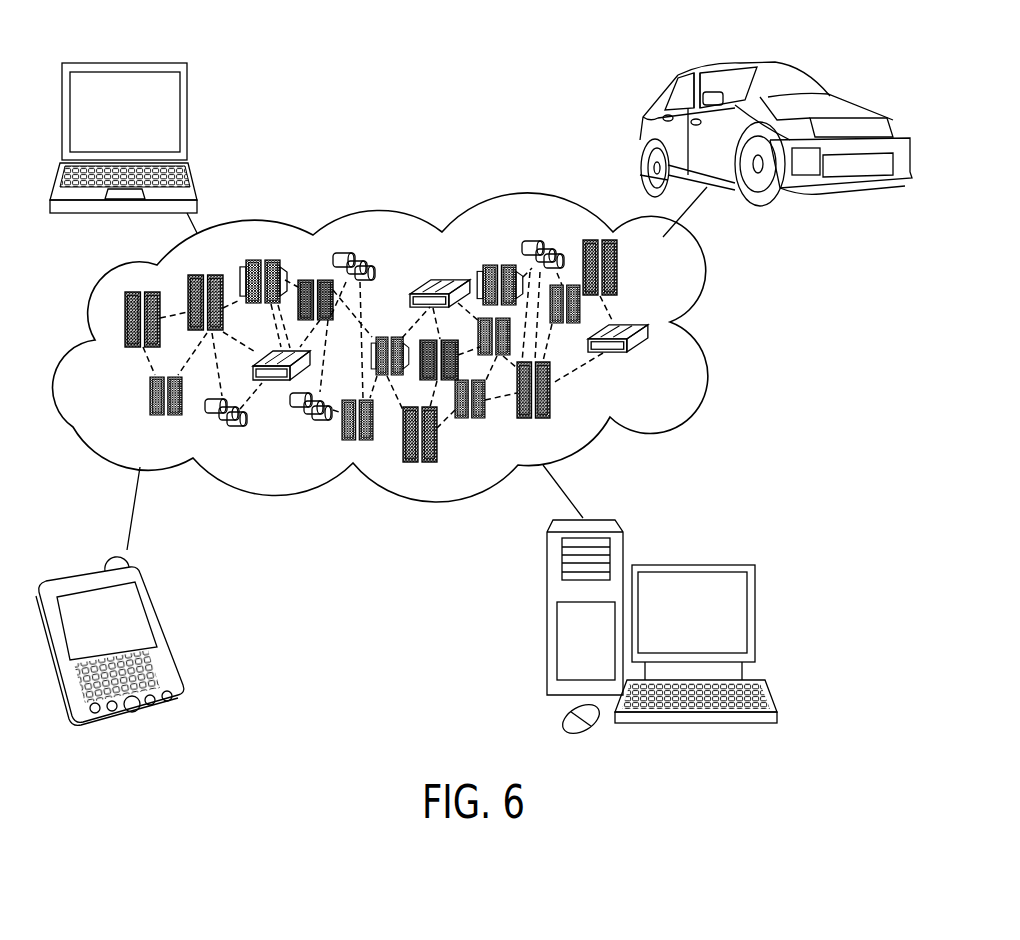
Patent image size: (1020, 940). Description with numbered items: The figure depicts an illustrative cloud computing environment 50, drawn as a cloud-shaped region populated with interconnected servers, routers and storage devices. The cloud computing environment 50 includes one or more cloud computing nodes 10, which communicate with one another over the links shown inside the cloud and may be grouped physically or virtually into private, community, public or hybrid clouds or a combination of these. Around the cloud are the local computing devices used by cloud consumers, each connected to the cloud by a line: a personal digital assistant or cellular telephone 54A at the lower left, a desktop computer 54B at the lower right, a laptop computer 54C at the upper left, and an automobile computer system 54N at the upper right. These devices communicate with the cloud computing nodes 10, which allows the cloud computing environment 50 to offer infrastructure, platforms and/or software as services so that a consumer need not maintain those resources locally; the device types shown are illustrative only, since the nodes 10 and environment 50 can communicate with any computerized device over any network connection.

The cloud computing node 10 is at (671, 378).
The cloud computing environment 50 is at (710, 277).
The personal digital assistant or cellular telephone 54A is at (158, 612).
The desktop computer 54B is at (757, 610).
The laptop computer 54C is at (187, 116).
The automobile computer system 54N is at (820, 83).